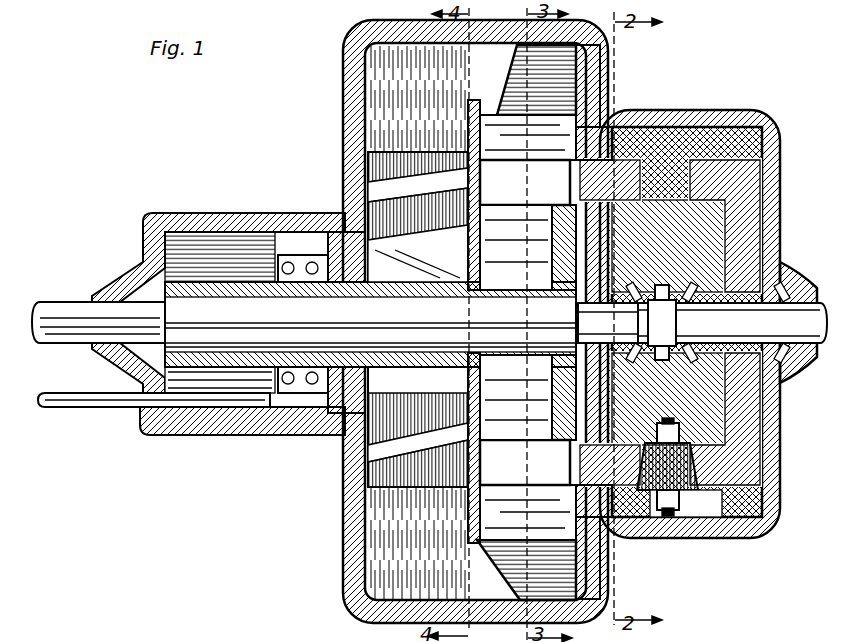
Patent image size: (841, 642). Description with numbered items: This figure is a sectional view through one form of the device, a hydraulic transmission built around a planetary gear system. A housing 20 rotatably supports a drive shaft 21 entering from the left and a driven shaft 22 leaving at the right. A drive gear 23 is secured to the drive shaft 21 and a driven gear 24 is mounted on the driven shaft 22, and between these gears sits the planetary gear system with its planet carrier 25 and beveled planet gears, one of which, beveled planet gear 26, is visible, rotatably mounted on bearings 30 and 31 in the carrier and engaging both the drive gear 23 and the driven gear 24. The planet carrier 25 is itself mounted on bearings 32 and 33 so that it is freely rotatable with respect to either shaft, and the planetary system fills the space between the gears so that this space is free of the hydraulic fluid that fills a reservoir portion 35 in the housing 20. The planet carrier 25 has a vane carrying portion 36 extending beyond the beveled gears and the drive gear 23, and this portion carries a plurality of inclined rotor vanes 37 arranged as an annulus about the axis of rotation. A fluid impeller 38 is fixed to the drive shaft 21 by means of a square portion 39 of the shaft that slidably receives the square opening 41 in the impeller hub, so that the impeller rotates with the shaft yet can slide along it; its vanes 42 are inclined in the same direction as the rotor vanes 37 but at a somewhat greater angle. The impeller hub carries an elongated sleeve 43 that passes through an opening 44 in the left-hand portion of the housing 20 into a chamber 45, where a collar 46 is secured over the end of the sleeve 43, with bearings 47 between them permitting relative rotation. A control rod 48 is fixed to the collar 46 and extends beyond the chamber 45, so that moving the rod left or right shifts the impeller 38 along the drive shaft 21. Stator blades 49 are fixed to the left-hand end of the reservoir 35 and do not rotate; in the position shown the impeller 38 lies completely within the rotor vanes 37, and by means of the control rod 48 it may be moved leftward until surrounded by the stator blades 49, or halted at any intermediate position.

The housing 20 is at (648, 105).
The drive shaft 21 is at (55, 310).
The driven shaft 22 is at (790, 350).
The drive gear 23 is at (615, 150).
The driven gear 24 is at (755, 175).
The planet carrier 25 is at (705, 230).
The beveled planet gear 26 is at (680, 470).
The bearing 30 is at (700, 515).
The bearing 31 is at (682, 433).
The bearing 32 is at (608, 323).
The bearing 33 is at (678, 318).
The reservoir portion 35 is at (600, 52).
The vane carrying portion 36 is at (662, 140).
The rotor vanes 37 is at (600, 80).
The fluid impeller 38 is at (562, 415).
The square portion 39 is at (222, 333).
The square opening 41 is at (427, 284).
The vanes 42 is at (510, 240).
The elongated sleeve 43 is at (405, 372).
The opening 44 is at (330, 438).
The chamber 45 is at (190, 230).
The collar 46 is at (276, 365).
The bearings 47 is at (290, 284).
The control rod 48 is at (128, 402).
The stator blades 49 is at (388, 118).